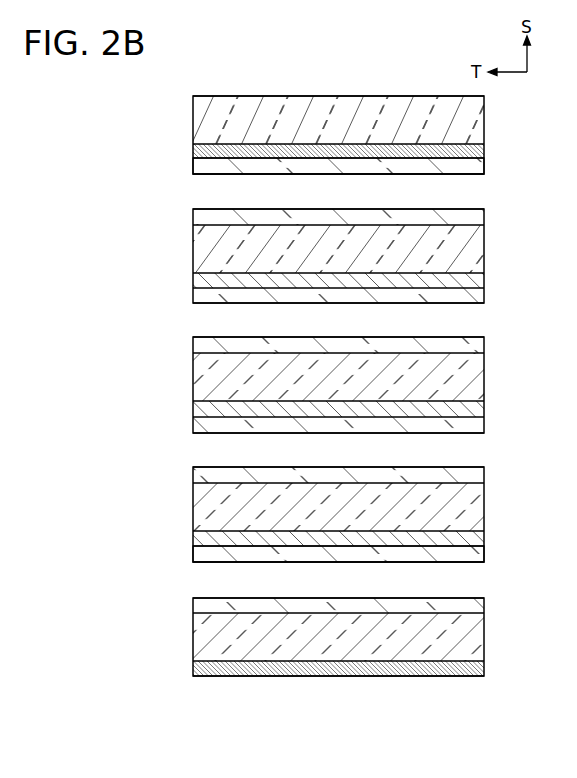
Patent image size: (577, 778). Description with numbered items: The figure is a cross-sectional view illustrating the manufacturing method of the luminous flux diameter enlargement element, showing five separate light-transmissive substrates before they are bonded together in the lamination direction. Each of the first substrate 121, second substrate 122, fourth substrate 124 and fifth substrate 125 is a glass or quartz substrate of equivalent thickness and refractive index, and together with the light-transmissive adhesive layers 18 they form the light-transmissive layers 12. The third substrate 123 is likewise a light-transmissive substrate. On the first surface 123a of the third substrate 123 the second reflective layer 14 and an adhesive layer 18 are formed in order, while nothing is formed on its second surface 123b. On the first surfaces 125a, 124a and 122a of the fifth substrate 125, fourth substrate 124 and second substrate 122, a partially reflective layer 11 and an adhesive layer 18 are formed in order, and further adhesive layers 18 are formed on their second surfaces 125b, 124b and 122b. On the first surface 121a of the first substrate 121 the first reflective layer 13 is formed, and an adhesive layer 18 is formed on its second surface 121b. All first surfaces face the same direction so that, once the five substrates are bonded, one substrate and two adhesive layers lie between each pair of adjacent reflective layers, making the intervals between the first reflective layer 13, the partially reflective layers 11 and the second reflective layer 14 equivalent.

The partially reflective layer 11 is at (197, 279).
The light-transmissive layer 12 is at (313, 378).
The first reflective layer 13 is at (197, 668).
The second reflective layer 14 is at (196, 150).
The adhesive layer 18 is at (197, 348).
The first substrate 121 is at (200, 640).
The first surface 121a is at (437, 669).
The second surface 121b is at (350, 612).
The second substrate 122 is at (205, 507).
The first surface 122a is at (437, 539).
The second surface 122b is at (350, 482).
The third substrate 123 is at (205, 118).
The first surface 123a is at (437, 152).
The second surface 123b is at (350, 96).
The fourth substrate 124 is at (205, 375).
The first surface 124a is at (437, 409).
The second surface 124b is at (350, 352).
The fifth substrate 125 is at (205, 250).
The first surface 125a is at (437, 281).
The second surface 125b is at (348, 224).